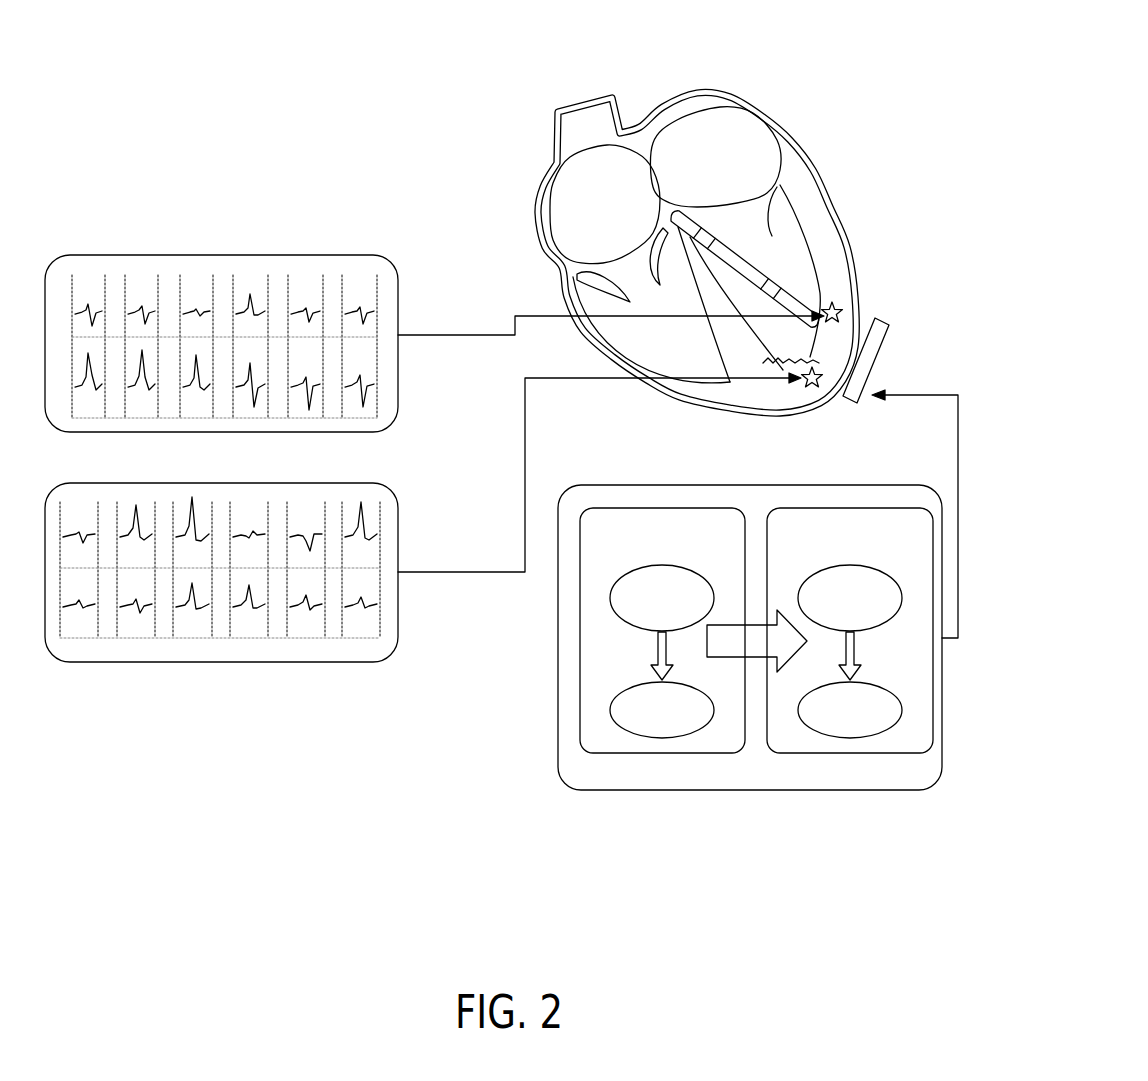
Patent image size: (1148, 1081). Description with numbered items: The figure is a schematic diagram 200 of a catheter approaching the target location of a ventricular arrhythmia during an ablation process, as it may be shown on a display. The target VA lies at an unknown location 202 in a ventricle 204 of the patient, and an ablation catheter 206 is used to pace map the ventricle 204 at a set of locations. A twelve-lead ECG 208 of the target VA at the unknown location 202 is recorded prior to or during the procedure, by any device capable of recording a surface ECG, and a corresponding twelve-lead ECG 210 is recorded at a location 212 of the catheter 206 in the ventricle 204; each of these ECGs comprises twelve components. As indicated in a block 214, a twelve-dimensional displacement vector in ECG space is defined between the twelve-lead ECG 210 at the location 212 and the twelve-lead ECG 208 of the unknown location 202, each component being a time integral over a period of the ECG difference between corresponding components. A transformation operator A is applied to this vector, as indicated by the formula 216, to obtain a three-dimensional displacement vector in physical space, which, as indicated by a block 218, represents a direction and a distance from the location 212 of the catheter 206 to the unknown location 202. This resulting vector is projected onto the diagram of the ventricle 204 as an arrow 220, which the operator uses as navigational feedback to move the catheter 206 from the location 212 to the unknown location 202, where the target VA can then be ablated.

The schematic diagram 200 is at (207, 137).
The unknown location 202 is at (817, 377).
The ventricle 204 is at (722, 98).
The ablation catheter 206 is at (767, 283).
The 12-lead ECG of the target VA 208 is at (398, 535).
The 12-lead ECG 210 is at (398, 395).
The location 212 is at (843, 310).
The block 214 is at (613, 742).
The formula 216 is at (762, 793).
The block 218 is at (897, 742).
The arrow 220 is at (883, 327).